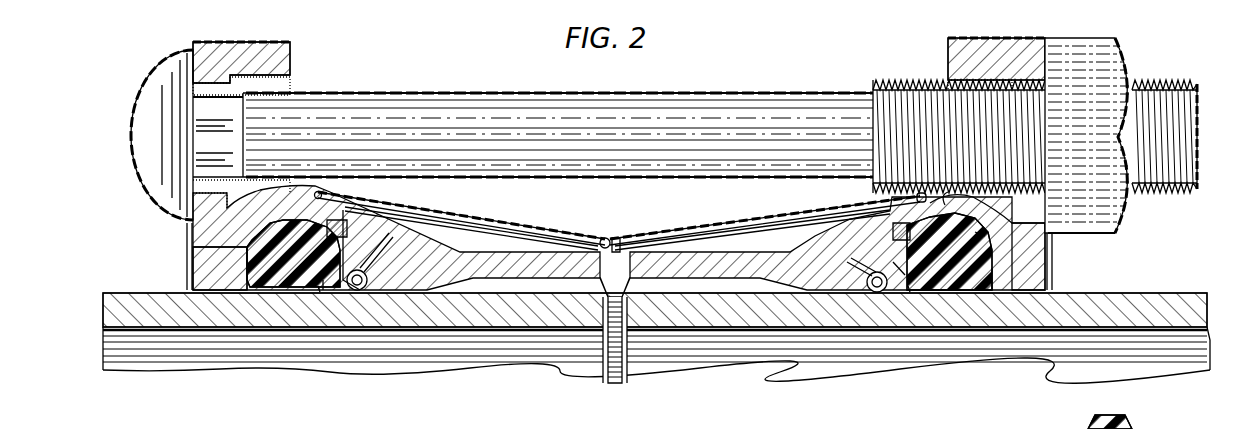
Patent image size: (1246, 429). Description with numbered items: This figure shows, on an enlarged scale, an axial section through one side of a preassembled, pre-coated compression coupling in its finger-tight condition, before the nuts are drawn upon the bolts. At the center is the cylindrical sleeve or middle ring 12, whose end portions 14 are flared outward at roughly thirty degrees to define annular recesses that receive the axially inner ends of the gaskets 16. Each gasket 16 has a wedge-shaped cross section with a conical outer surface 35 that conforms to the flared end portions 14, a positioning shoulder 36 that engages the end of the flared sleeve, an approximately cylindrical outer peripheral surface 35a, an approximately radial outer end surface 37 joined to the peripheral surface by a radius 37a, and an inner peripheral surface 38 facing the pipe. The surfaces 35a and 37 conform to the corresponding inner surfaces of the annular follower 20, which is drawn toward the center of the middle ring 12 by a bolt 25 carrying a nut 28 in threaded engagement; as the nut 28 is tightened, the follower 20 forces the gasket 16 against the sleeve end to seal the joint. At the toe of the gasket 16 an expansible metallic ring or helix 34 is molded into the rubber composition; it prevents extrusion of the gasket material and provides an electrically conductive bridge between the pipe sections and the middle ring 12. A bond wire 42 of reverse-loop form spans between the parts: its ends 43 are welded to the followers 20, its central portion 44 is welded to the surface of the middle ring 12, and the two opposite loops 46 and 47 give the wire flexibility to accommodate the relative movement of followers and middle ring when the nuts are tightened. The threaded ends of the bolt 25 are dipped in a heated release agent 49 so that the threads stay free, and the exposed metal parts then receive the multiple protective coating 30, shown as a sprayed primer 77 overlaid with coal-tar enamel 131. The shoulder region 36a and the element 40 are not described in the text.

The middle ring 12 is at (683, 257).
The flared end portions 14 is at (840, 390).
The gasket 16 is at (190, 242).
The follower 20 is at (203, 257).
The bolt 25 is at (808, 110).
The nut 28 is at (1112, 62).
The multiple protective coating 30 is at (520, 92).
The expansible metallic ring or helix 34 is at (357, 292).
The conical or tapered outer surface 35 is at (323, 292).
The outer peripheral surface 35a is at (958, 204).
The positioning shoulder 36 is at (347, 236).
The pivot block fragment 36a is at (1123, 420).
The outer end surface 37 is at (992, 270).
The radius 37a is at (980, 234).
The inner peripheral surface 38 is at (273, 290).
The base plate 40 is at (192, 290).
The bond wire 42 is at (604, 236).
The ends 43 is at (340, 198).
The central portion 44 is at (620, 242).
The loop 46 is at (490, 218).
The loop 47 is at (762, 216).
The release agent 49 is at (1170, 92).
The primer 77 is at (133, 121).
The coal-tar enamel 131 is at (141, 88).